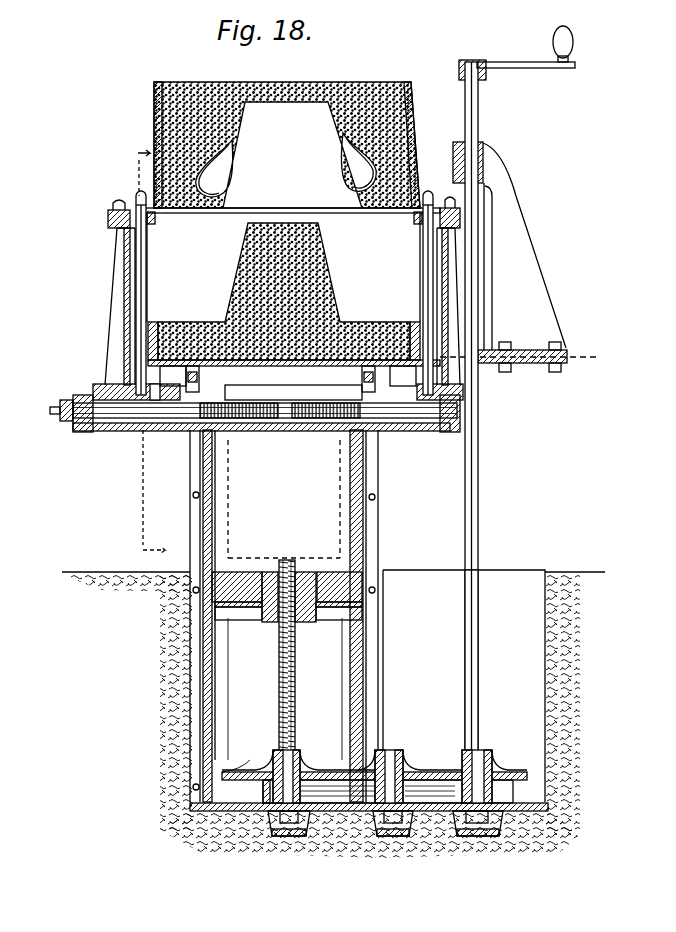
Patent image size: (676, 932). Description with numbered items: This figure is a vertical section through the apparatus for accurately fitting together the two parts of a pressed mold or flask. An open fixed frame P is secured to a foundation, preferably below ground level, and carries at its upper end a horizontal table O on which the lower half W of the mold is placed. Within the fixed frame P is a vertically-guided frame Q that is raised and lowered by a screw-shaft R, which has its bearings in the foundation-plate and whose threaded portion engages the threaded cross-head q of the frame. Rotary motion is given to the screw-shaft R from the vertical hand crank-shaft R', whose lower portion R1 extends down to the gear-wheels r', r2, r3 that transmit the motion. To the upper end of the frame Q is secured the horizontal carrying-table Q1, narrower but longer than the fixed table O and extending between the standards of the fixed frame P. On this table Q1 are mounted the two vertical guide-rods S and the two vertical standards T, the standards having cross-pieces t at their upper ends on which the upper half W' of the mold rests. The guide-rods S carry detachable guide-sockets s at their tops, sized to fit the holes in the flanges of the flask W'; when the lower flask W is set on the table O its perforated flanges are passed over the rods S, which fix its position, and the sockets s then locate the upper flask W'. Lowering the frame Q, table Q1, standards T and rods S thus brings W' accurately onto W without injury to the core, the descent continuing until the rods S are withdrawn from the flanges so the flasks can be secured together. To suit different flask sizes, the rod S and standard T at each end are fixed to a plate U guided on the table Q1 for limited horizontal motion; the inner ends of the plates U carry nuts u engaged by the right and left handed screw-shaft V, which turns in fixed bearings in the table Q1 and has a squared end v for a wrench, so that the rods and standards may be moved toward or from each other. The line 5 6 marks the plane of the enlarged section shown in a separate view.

The upper half of mold (flask) W' is at (287, 145).
The lower half of mold (flask) W is at (284, 291).
The horizontal table O is at (374, 266).
The vertical standards T is at (104, 280).
The vertical guide-rods S is at (284, 293).
The detachable guide-sockets s is at (284, 221).
The cross-pieces t is at (276, 203).
The vertical hand crank-shaft R' is at (517, 414).
The plate U is at (288, 381).
The nuts u is at (280, 379).
The right and left handed screw-shaft V is at (265, 417).
The squared end v is at (50, 412).
The horizontal carrying-table Q1 is at (266, 425).
The open fixed frame P is at (278, 589).
The vertically-guided frame Q is at (279, 600).
The threaded cross-head q is at (287, 596).
The screw-shaft R is at (296, 660).
The vertical hand crank-shaft R1 is at (464, 686).
The gear-wheel r3 is at (298, 787).
The gear-wheel r2 is at (410, 787).
The gear-wheel r' is at (490, 787).
The section line 5 is at (137, 170).
The section line 6 is at (144, 496).